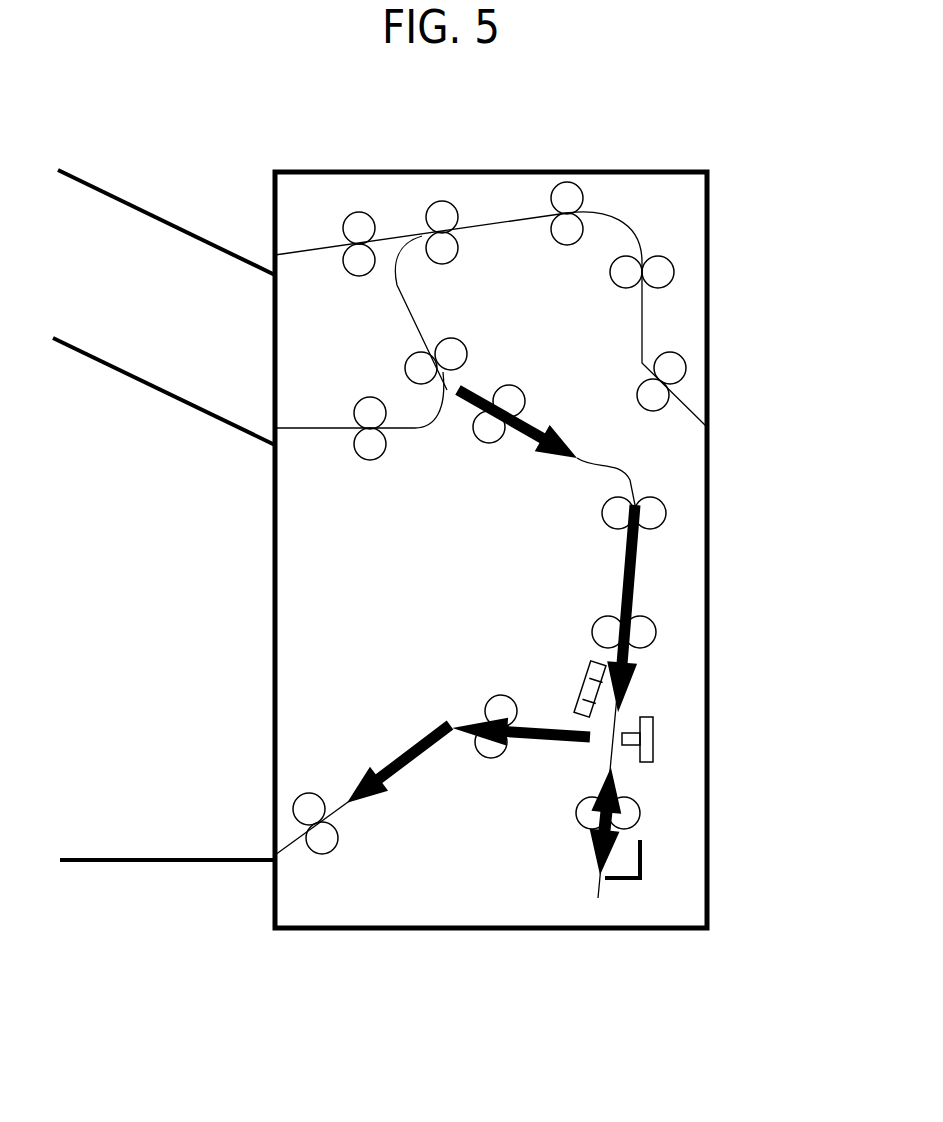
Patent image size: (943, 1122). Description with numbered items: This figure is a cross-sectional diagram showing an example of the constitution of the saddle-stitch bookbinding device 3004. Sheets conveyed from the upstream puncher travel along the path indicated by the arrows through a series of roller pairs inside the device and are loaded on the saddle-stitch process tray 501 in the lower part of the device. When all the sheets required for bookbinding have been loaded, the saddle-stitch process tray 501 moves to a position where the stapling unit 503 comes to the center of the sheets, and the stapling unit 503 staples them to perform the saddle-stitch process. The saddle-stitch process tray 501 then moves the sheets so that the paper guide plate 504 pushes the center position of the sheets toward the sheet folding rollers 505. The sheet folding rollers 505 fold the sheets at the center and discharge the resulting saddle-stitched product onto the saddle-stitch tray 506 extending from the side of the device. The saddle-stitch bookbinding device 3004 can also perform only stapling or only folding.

The saddle-stitch bookbinding device 3004 is at (697, 228).
The saddle-stitch process tray 501 is at (642, 867).
The stapling unit 503 is at (582, 682).
The paper guide plate 504 is at (653, 739).
The sheet folding rollers 505 is at (490, 713).
The saddle-stitch tray 506 is at (148, 858).